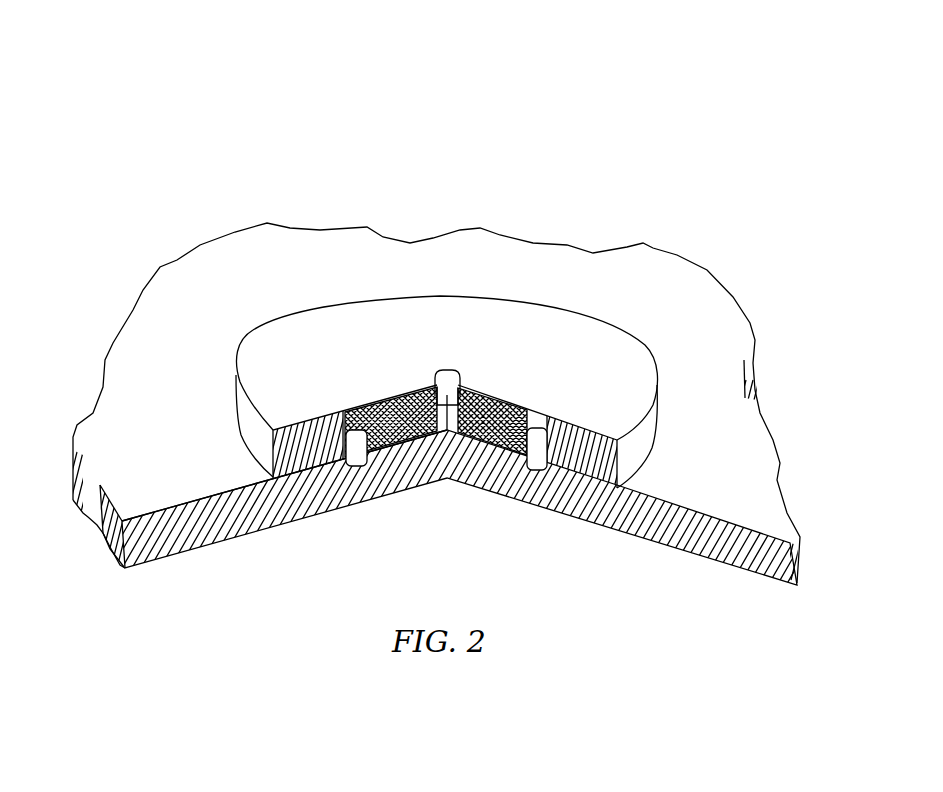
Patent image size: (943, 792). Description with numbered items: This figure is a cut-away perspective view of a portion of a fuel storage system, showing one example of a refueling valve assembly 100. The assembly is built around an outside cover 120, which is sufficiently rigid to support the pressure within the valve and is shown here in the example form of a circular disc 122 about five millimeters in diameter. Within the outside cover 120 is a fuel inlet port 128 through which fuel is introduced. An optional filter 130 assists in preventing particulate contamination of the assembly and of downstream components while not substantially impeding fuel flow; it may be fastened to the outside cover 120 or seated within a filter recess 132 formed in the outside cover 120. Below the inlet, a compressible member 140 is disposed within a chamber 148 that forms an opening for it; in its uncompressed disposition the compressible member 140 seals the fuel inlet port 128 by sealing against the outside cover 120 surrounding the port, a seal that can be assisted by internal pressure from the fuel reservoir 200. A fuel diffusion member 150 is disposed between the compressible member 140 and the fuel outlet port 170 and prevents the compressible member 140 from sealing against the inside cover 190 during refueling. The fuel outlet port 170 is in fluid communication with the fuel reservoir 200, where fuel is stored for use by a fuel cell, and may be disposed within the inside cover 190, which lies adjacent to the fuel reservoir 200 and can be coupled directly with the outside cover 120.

The refueling valve assembly 100 is at (310, 123).
The outside cover 120 is at (436, 399).
The circular disc 122 is at (515, 368).
The fuel inlet port 128 is at (551, 219).
The filter 130 is at (598, 263).
The filter recess 132 is at (446, 414).
The compressible member 140 is at (352, 261).
The chamber 148 is at (637, 412).
The fuel diffusion member 150 is at (336, 297).
The fuel outlet port 170 is at (436, 388).
The inside cover 190 is at (237, 435).
The fuel reservoir 200 is at (471, 460).